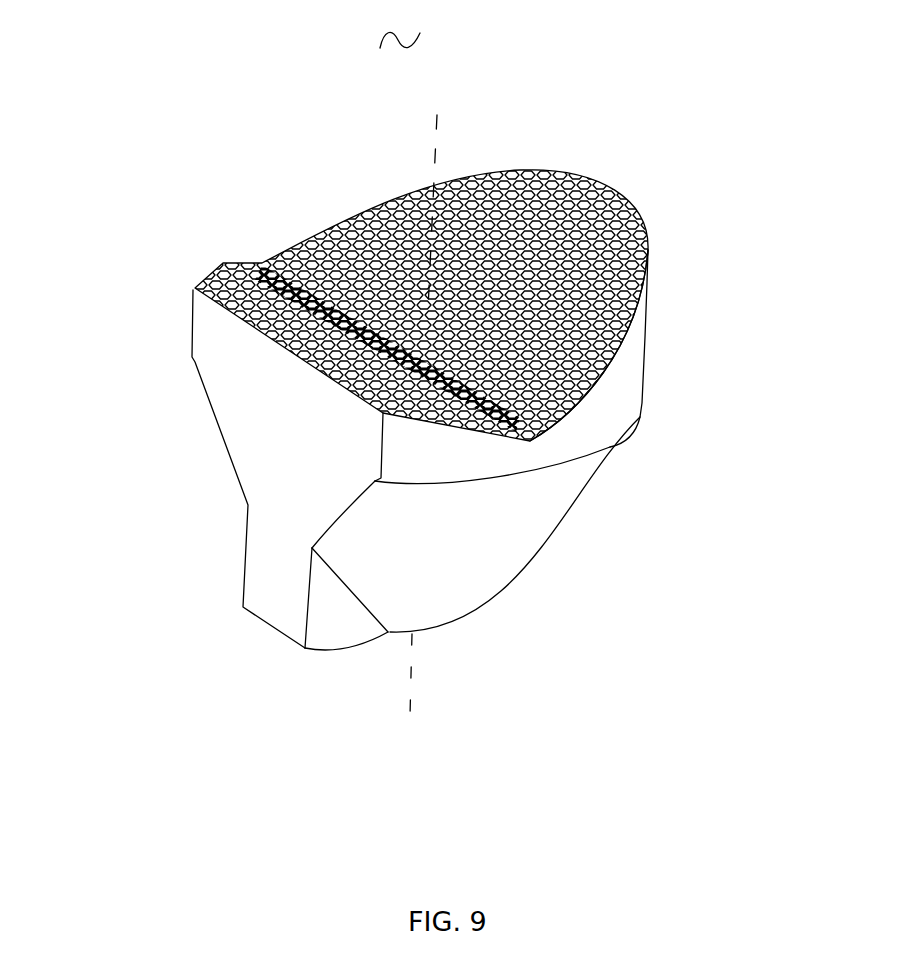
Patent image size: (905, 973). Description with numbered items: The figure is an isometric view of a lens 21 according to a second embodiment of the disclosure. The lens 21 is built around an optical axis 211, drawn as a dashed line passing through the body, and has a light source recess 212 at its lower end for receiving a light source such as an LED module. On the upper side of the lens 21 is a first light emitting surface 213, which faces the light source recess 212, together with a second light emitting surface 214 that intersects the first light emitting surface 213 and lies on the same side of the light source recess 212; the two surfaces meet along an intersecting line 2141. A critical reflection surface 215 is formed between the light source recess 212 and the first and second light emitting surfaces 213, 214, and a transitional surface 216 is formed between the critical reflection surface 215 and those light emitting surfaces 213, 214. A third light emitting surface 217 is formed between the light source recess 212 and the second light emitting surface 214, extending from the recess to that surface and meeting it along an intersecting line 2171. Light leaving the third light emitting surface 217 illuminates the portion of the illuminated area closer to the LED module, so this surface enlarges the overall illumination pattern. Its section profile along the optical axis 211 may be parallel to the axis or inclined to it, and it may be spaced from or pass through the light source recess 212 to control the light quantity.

The lens 21 is at (400, 28).
The optical axis 211 is at (435, 135).
The light source recess 212 is at (412, 633).
The first light emitting surface 213 is at (512, 258).
The second light emitting surface 214 is at (298, 312).
The intersecting line 2141 is at (570, 370).
The critical reflection surface 215 is at (493, 550).
The transitional surface 216 is at (622, 387).
The third light emitting surface 217 is at (296, 448).
The intersecting line 2171 is at (253, 332).